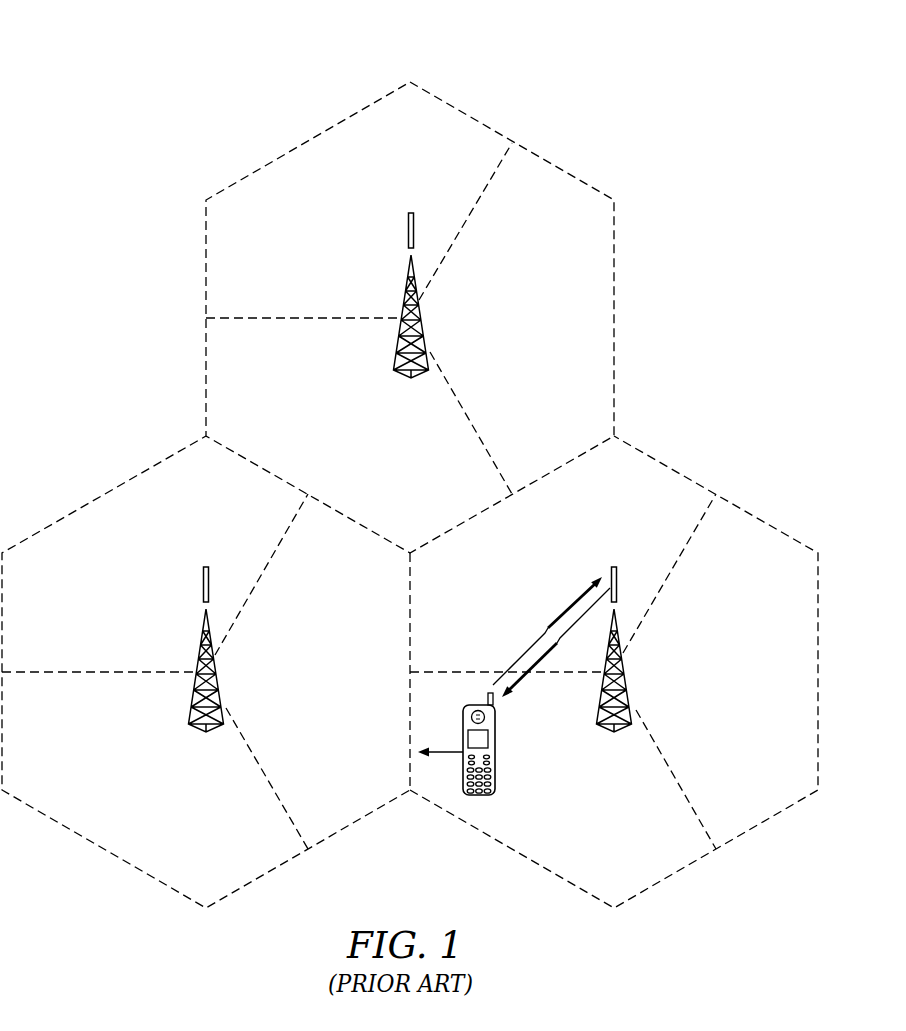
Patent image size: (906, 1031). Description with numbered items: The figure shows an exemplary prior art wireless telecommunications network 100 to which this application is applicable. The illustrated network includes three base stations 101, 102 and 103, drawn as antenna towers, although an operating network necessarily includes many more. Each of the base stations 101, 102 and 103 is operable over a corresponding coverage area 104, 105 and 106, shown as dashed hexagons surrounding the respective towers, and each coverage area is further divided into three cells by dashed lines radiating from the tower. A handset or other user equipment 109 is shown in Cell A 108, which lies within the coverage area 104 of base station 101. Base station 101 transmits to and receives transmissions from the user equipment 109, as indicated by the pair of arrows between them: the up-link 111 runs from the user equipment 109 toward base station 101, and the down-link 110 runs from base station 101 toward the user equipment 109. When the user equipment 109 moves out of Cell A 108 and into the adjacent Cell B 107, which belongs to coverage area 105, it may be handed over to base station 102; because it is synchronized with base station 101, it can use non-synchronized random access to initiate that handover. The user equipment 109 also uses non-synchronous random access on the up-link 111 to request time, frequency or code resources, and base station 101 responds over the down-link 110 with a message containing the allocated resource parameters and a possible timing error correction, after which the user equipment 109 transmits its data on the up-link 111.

The wireless telecommunications network 100 is at (193, 58).
The base station 101 is at (627, 683).
The base station 102 is at (203, 632).
The base station 103 is at (407, 277).
The coverage area 104 is at (748, 832).
The coverage area 105 is at (97, 850).
The coverage area 106 is at (615, 313).
The Cell B 107 is at (363, 790).
The Cell A 108 is at (622, 860).
The user equipment 109 is at (496, 762).
The down-link 110 is at (538, 667).
The up-link 111 is at (562, 613).